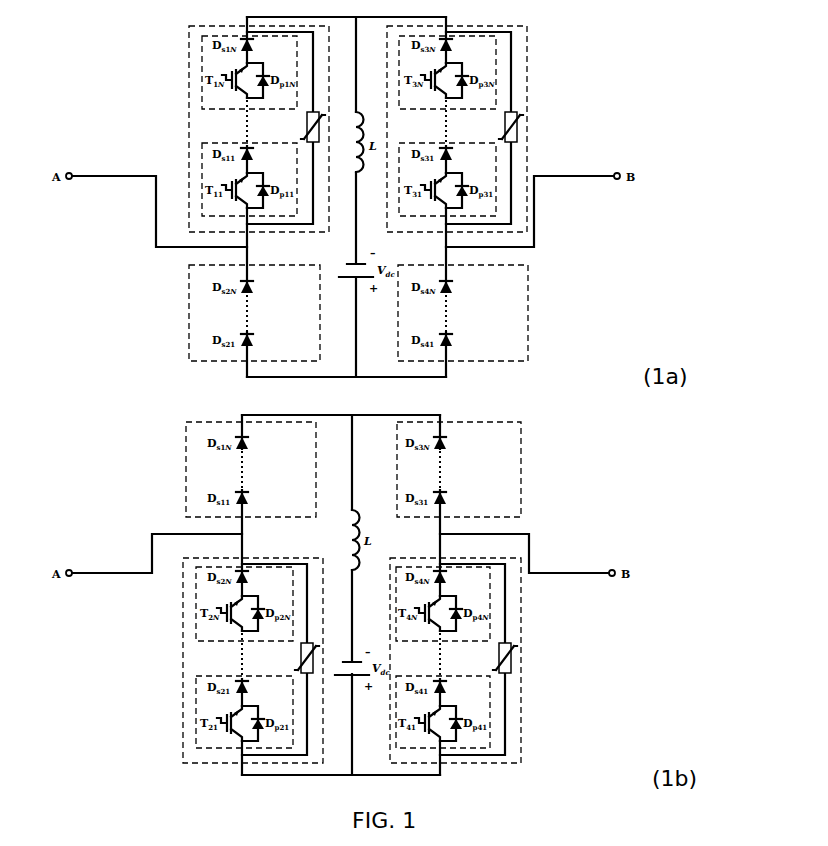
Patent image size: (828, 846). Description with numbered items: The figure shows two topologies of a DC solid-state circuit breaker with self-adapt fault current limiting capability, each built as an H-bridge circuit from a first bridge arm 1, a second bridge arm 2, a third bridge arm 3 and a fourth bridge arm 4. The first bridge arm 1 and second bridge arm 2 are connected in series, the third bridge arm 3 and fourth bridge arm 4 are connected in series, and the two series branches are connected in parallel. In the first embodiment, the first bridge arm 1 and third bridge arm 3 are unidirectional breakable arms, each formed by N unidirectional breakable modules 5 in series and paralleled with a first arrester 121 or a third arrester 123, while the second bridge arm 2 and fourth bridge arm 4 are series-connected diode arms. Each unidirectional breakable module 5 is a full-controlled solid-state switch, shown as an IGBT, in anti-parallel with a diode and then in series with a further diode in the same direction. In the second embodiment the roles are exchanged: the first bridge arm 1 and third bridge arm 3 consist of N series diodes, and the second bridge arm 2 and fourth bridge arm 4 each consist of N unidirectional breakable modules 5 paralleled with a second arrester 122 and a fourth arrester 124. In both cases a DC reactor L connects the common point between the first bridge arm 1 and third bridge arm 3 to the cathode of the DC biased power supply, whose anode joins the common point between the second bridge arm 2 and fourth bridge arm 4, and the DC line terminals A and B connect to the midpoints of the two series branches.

The first bridge arm 1 is at (189, 122).
The second bridge arm 2 is at (189, 312).
The third bridge arm 3 is at (527, 70).
The fourth bridge arm 4 is at (528, 297).
The unidirectional breakable module 5 is at (202, 70).
The first arrester 121 is at (320, 136).
The second arrester 122 is at (313, 668).
The third arrester 123 is at (518, 133).
The fourth arrester 124 is at (512, 667).